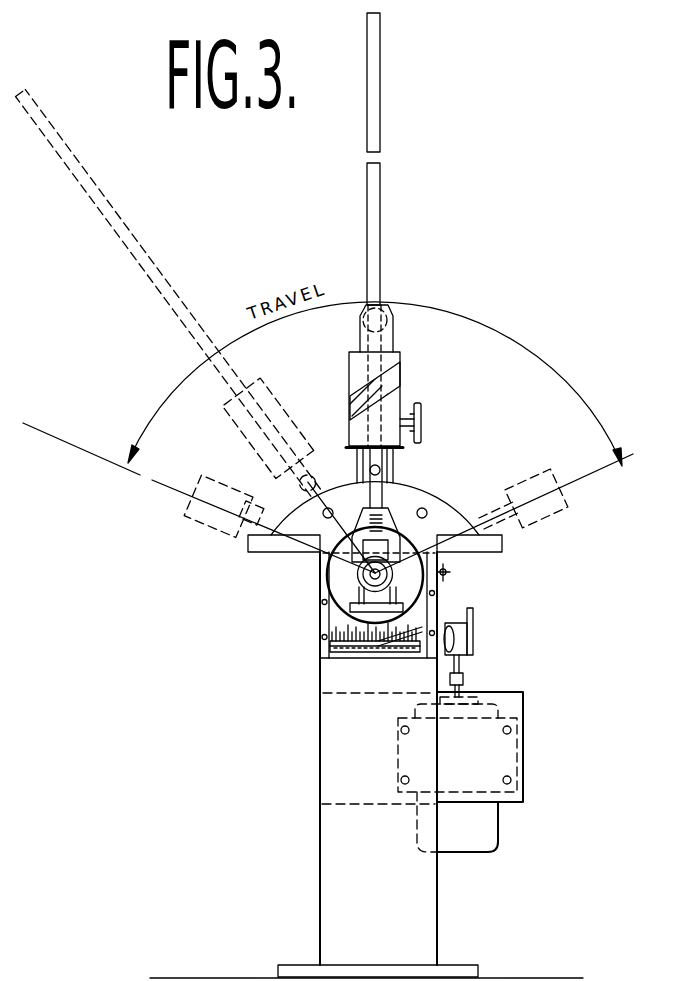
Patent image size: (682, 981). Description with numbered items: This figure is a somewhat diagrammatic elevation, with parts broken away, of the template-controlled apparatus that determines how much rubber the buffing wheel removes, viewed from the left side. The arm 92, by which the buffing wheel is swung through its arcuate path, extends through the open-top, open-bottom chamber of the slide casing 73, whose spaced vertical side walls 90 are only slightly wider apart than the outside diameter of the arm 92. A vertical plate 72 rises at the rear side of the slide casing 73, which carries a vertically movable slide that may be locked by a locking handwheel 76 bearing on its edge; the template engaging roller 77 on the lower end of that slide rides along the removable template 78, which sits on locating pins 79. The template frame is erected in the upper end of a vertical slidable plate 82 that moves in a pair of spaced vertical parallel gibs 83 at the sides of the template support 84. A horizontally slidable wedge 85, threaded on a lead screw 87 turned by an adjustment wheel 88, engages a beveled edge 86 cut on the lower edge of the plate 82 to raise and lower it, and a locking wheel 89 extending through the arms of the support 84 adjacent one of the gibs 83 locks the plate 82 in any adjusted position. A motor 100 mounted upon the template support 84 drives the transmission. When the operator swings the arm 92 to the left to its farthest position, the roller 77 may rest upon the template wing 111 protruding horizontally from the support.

The vertical plate 72 is at (395, 336).
The slide casing 73 is at (406, 394).
The locking handwheel 76 is at (421, 421).
The template engaging roller 77 is at (381, 469).
The template 78 is at (468, 500).
The locating pins 79 is at (332, 507).
The vertical slidable plate 82 is at (432, 606).
The gibs 83 is at (318, 612).
The template support 84 is at (320, 770).
The wedge 85 is at (377, 652).
The beveled edge 86 is at (405, 640).
The lead screw 87 is at (345, 654).
The adjustment wheel 88 is at (473, 643).
The locking wheel 89 is at (449, 572).
The side walls 90 is at (394, 373).
The arm 92 is at (381, 274).
The motor 100 is at (498, 830).
The template wing 111 is at (262, 556).